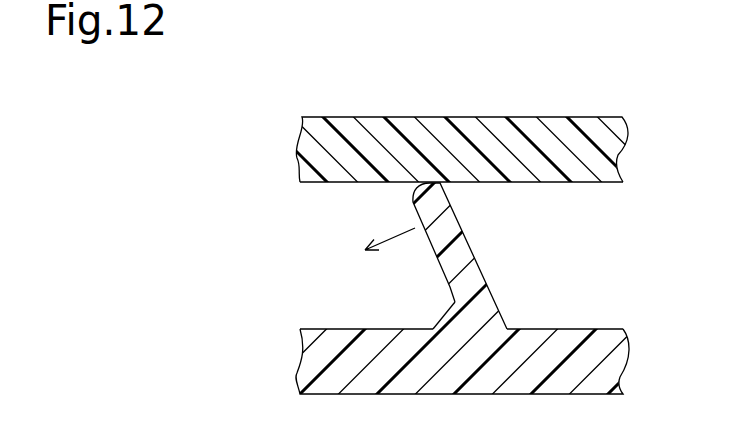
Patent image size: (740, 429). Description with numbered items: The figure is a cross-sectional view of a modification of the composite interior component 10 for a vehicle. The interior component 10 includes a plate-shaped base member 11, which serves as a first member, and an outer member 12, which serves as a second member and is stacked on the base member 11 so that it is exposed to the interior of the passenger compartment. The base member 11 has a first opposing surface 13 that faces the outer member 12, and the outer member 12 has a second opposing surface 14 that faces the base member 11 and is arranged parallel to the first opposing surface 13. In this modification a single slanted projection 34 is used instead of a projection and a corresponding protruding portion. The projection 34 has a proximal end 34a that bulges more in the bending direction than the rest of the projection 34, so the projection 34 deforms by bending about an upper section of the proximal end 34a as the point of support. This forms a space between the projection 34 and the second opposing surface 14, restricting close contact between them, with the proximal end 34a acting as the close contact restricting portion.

The interior component 10 is at (234, 103).
The base member 11 is at (618, 157).
The outer member 12 is at (619, 366).
The first opposing surface 13 is at (312, 195).
The second opposing surface 14 is at (315, 328).
The projection 34 is at (472, 248).
The proximal end 34a is at (443, 310).